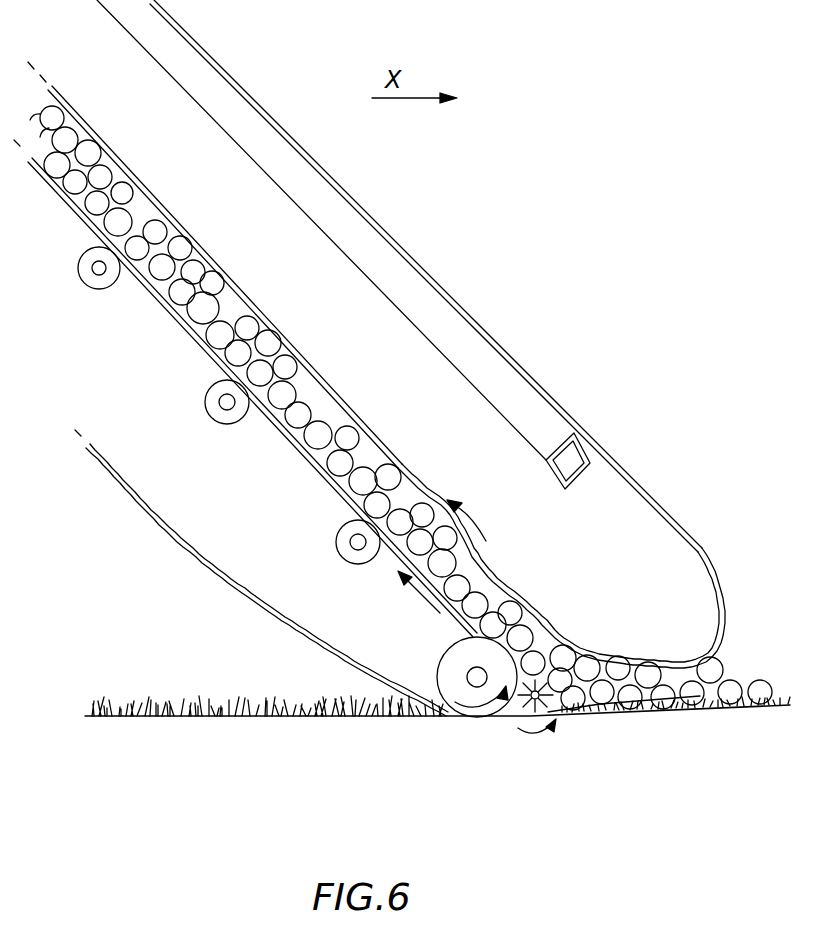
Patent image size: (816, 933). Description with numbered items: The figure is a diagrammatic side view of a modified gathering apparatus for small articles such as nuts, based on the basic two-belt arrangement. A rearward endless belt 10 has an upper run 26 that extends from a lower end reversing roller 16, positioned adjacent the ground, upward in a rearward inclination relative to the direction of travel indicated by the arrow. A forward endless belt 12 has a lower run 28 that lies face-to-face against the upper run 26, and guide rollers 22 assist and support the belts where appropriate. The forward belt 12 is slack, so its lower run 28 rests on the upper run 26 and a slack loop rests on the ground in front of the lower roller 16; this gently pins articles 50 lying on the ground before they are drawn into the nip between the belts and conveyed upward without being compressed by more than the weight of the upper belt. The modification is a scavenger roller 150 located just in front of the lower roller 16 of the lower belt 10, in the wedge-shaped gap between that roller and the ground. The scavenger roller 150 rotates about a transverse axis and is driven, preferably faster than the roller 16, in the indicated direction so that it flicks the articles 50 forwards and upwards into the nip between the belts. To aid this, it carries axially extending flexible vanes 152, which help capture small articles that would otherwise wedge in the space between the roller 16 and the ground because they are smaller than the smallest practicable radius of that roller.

The rearward endless belt 10 is at (185, 546).
The forward endless belt 12 is at (233, 84).
The lower end reversing roller 16 is at (460, 698).
The guide rollers 22 is at (348, 527).
The upper run 26 is at (177, 318).
The lower run 28 is at (164, 209).
The articles 50 is at (190, 268).
The scavenger roller 150 is at (514, 712).
The axially extending flexible vanes 152 is at (563, 702).